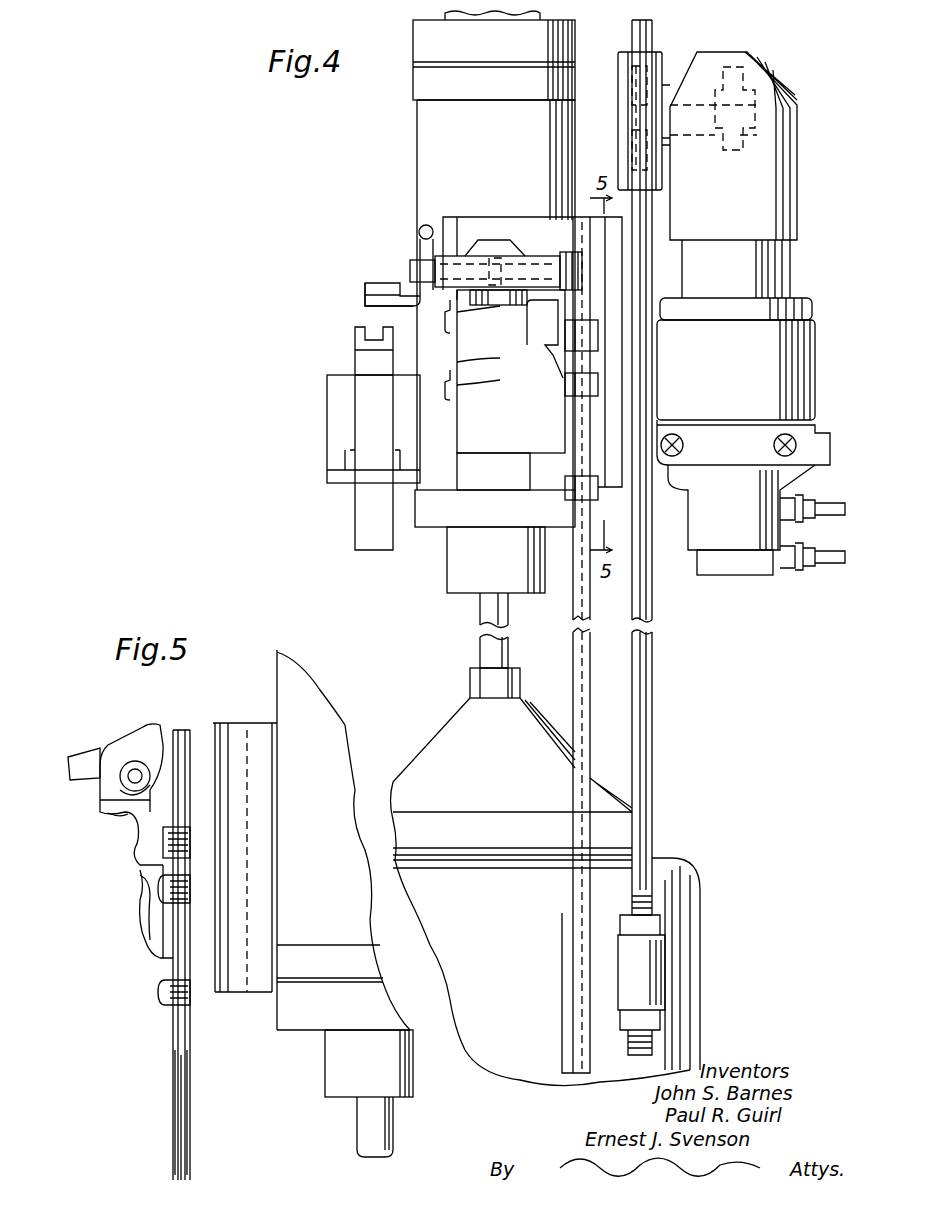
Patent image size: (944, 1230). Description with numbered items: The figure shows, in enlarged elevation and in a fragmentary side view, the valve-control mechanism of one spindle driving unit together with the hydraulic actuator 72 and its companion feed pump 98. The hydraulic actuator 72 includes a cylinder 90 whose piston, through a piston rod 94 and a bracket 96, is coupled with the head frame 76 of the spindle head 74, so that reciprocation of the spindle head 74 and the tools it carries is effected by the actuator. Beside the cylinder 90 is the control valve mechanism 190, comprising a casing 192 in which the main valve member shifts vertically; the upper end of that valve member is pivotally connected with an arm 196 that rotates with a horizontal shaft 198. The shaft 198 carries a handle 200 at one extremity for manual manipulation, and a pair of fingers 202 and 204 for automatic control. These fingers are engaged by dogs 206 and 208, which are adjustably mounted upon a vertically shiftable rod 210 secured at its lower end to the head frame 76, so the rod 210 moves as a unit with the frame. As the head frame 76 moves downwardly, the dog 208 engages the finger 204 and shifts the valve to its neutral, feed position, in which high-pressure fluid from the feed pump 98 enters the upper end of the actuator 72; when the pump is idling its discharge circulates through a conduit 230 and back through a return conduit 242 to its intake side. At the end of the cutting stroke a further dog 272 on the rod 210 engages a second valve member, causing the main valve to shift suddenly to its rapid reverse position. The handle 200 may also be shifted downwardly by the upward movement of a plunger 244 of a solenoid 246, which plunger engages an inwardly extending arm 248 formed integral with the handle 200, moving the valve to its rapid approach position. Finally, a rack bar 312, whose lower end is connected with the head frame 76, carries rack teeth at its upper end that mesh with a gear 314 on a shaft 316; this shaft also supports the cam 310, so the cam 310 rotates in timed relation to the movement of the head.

In FIG. 4, the hydraulic actuator 72 is at (403, 137).
In FIG. 4, the cylinder 90 is at (416, 170).
In FIG. 5, the cylinder 90 is at (308, 692).
In FIG. 4, the piston rod 94 is at (487, 642).
In FIG. 5, the piston rod 94 is at (357, 1133).
In FIG. 4, the bracket 96 is at (455, 738).
In FIG. 4, the feed pump 98 is at (697, 557).
In FIG. 4, the spindle head 74 is at (677, 855).
In FIG. 4, the head frame 76 is at (541, 934).
In FIG. 4, the control valve mechanism 190 is at (447, 413).
In FIG. 5, the control valve mechanism 190 is at (133, 853).
In FIG. 4, the casing 192 is at (523, 339).
In FIG. 5, the casing 192 is at (138, 885).
In FIG. 4, the arm 196 is at (493, 258).
In FIG. 4, the horizontal shaft 198 is at (410, 270).
In FIG. 5, the horizontal shaft 198 is at (133, 772).
In FIG. 4, the handle 200 is at (420, 236).
In FIG. 5, the handle 200 is at (78, 750).
In FIG. 4, the finger 202 is at (577, 260).
In FIG. 5, the finger 202 is at (142, 765).
In FIG. 4, the finger 204 is at (549, 319).
In FIG. 5, the finger 204 is at (122, 818).
In FIG. 4, the dog 206 is at (568, 490).
In FIG. 5, the dog 206 is at (160, 998).
In FIG. 4, the dog 208 is at (568, 384).
In FIG. 5, the dog 208 is at (162, 895).
In FIG. 4, the rod 210 is at (578, 654).
In FIG. 5, the rod 210 is at (172, 1085).
In FIG. 4, the conduit 230 is at (825, 506).
In FIG. 4, the return conduit 242 is at (832, 566).
In FIG. 4, the plunger 244 is at (355, 337).
In FIG. 4, the solenoid 246 is at (317, 465).
In FIG. 4, the arm 248 is at (365, 292).
In FIG. 4, the dog 272 is at (563, 348).
In FIG. 5, the dog 272 is at (163, 845).
In FIG. 4, the cam 310 is at (742, 78).
In FIG. 4, the rack bar 312 is at (654, 702).
In FIG. 4, the gear 314 is at (638, 82).
In FIG. 4, the shaft 316 is at (690, 108).